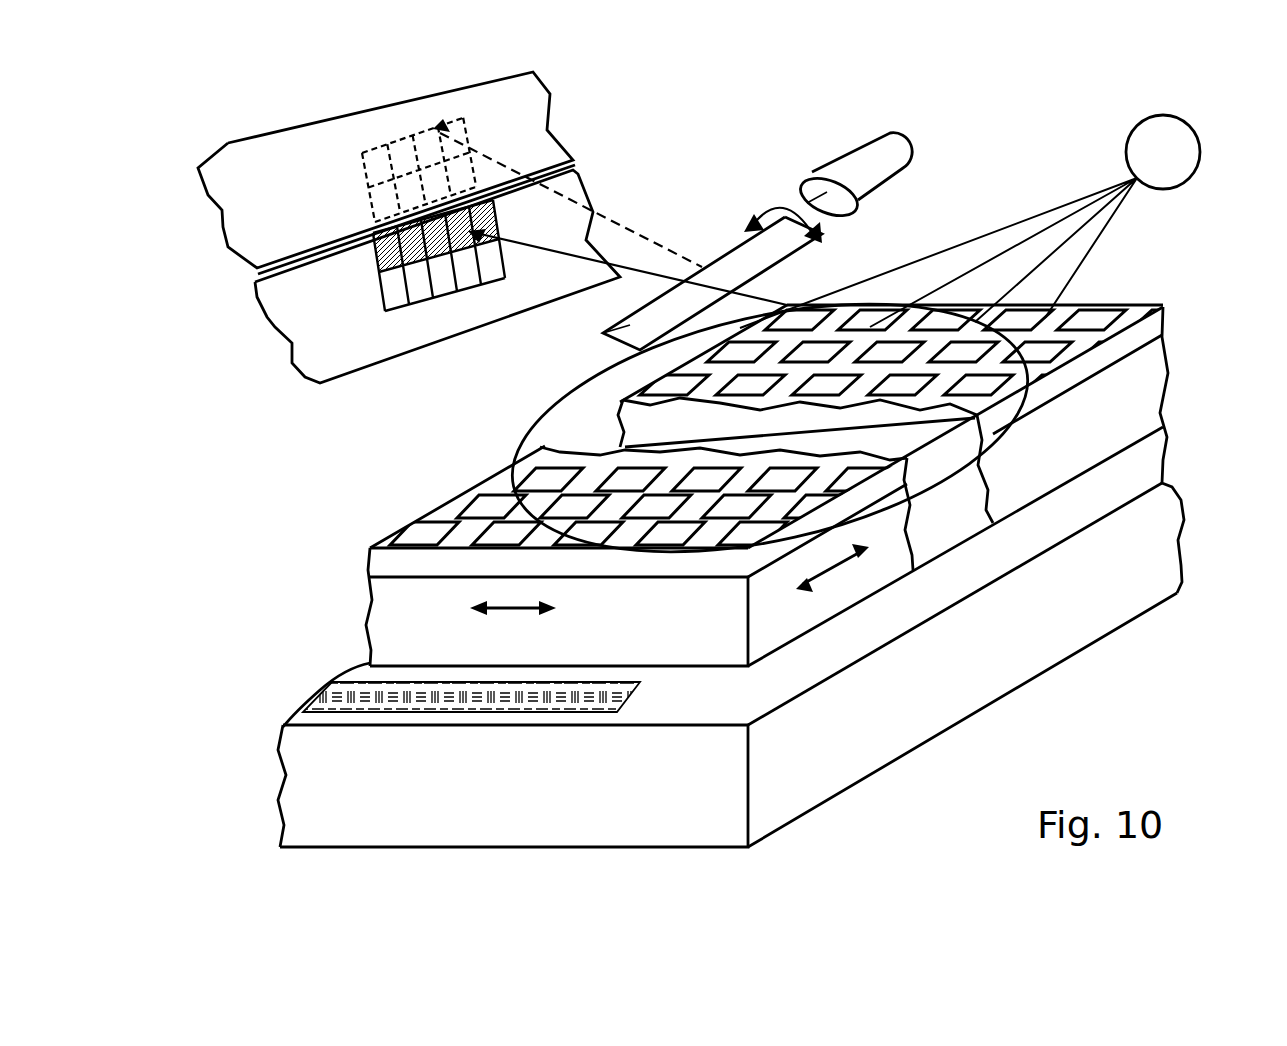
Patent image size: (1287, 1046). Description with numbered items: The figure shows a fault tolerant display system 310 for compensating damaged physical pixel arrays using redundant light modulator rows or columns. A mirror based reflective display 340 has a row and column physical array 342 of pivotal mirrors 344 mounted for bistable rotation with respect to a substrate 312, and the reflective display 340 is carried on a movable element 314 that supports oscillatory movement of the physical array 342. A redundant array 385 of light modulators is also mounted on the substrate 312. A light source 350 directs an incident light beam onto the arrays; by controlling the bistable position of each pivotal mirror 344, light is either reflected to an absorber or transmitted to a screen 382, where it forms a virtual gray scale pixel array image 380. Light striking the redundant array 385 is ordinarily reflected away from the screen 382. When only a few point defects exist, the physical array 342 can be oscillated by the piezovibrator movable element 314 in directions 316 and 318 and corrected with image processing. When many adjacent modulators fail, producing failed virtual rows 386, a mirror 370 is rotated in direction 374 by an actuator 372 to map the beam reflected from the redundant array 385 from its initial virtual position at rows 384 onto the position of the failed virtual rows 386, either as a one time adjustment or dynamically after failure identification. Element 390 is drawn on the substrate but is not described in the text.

The fault tolerant display system 310 is at (1000, 146).
The substrate 312 is at (1172, 525).
The movable element 314 is at (366, 602).
The direction 316 is at (512, 612).
The direction 318 is at (836, 572).
The mirror based reflective display 340 is at (717, 428).
The physical array 342 is at (452, 486).
The pivotal mirrors 344 is at (524, 468).
The light source 350 is at (1183, 165).
The mirror 370 is at (722, 238).
The actuator 372 is at (866, 150).
The direction 374 is at (778, 208).
The virtual gray scale pixel array image 380 is at (504, 276).
The screen 382 is at (450, 173).
The rows 384 is at (354, 171).
The redundant array 385 is at (1127, 298).
The failed virtual rows 386 is at (549, 256).
The bar code identifier 390 is at (336, 698).